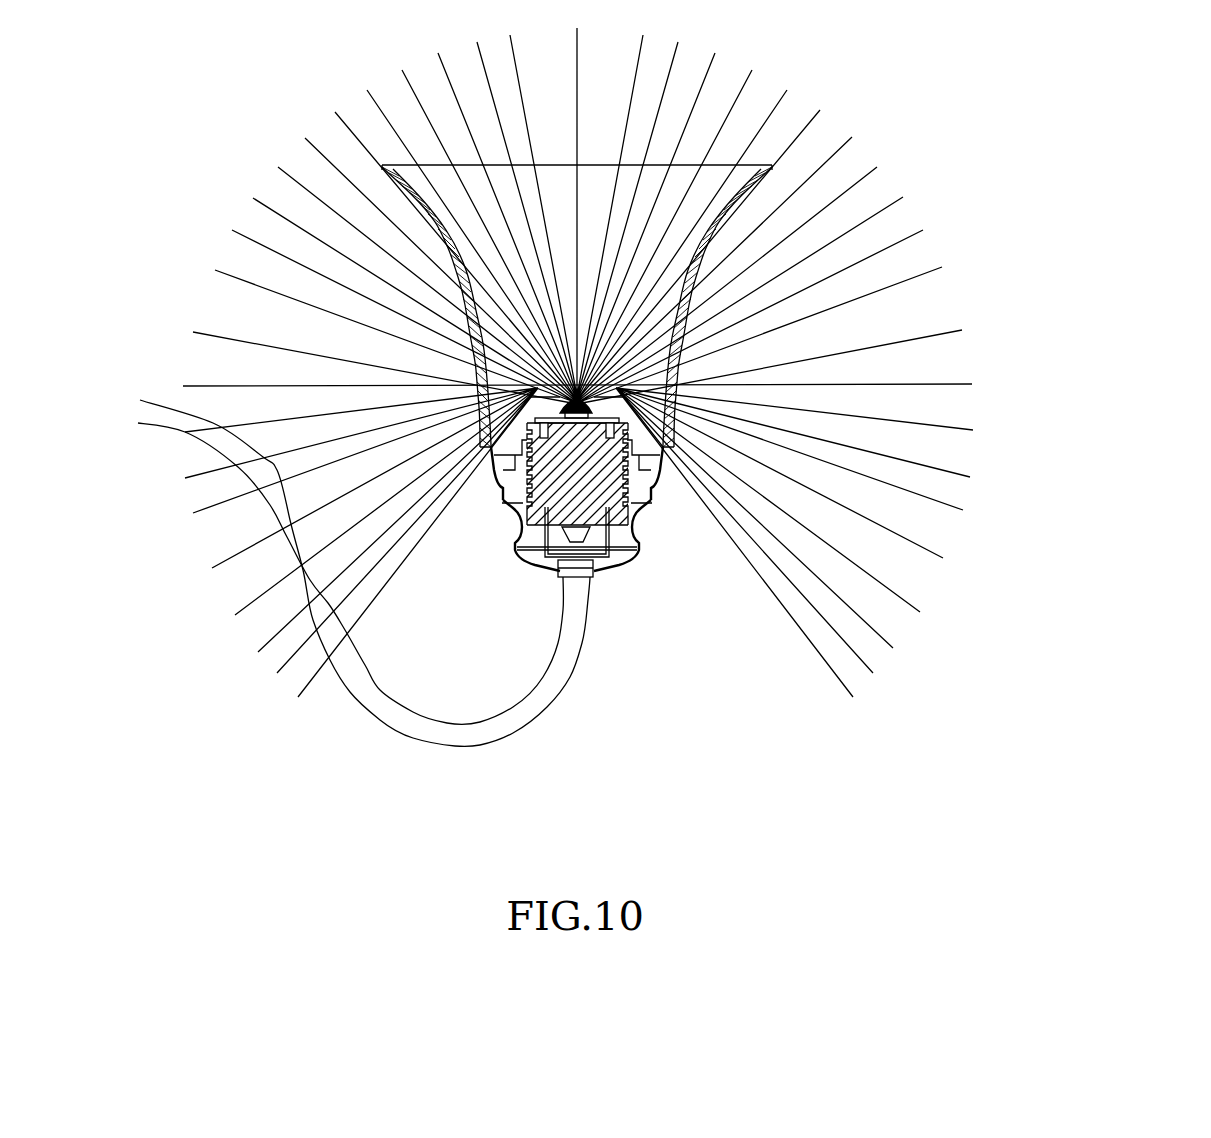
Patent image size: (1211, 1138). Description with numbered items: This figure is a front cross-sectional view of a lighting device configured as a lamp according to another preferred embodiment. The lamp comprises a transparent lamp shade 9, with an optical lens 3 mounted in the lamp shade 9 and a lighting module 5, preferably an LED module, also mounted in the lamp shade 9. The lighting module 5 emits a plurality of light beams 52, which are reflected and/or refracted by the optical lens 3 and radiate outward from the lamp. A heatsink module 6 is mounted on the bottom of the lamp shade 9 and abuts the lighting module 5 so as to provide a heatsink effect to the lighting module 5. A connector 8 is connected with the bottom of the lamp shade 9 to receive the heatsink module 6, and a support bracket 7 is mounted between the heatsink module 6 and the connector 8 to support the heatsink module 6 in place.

The light beams 52 is at (352, 128).
The transparent lamp shade 9 is at (756, 165).
The optical lens 3 is at (488, 460).
The connector 8 is at (657, 493).
The lighting module 5 is at (500, 512).
The support bracket 7 is at (543, 556).
The heatsink module 6 is at (595, 567).